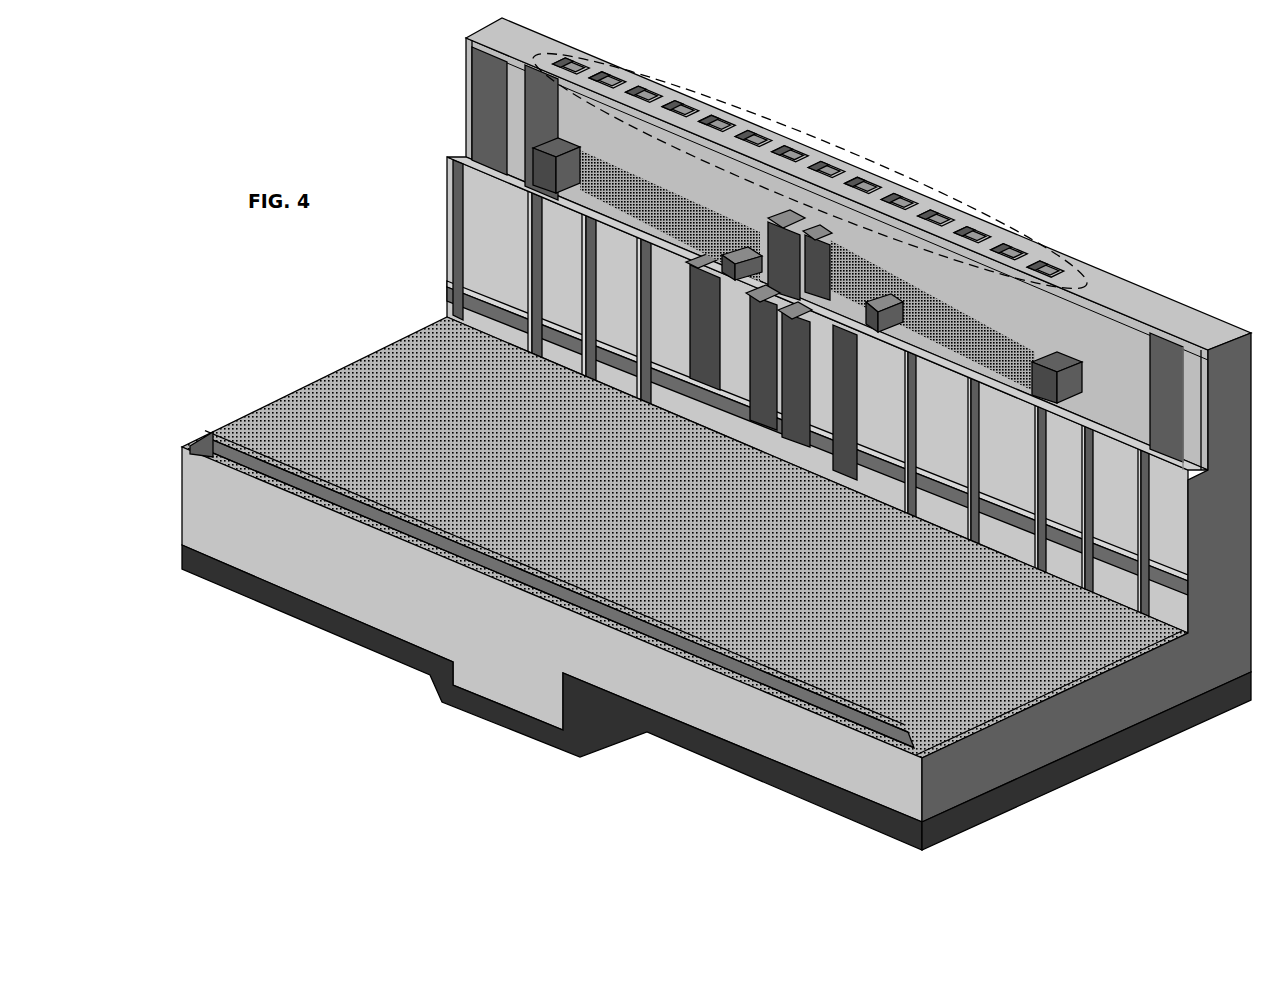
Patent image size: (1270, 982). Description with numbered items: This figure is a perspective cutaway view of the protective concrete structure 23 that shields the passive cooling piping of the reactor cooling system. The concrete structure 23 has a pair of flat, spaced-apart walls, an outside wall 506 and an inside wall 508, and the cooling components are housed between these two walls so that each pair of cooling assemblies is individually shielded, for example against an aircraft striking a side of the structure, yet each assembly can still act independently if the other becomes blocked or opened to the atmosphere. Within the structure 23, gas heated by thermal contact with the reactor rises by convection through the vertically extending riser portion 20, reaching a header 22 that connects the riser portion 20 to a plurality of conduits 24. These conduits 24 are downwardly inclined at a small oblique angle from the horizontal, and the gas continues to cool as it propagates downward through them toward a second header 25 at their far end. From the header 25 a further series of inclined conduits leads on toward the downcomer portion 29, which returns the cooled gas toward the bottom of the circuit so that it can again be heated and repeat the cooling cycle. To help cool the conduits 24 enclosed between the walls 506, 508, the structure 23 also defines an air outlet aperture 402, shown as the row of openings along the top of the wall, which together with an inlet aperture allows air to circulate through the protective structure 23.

The concrete structure 23 is at (1130, 300).
The air outlet aperture 402 is at (762, 105).
The outside wall 506 is at (837, 254).
The inside wall 508 is at (1023, 465).
The header 25 is at (557, 149).
The plurality of conduits 24 is at (635, 177).
The header 22 is at (783, 222).
The riser portion 20 is at (762, 413).
The downcomer portion 29 is at (707, 410).